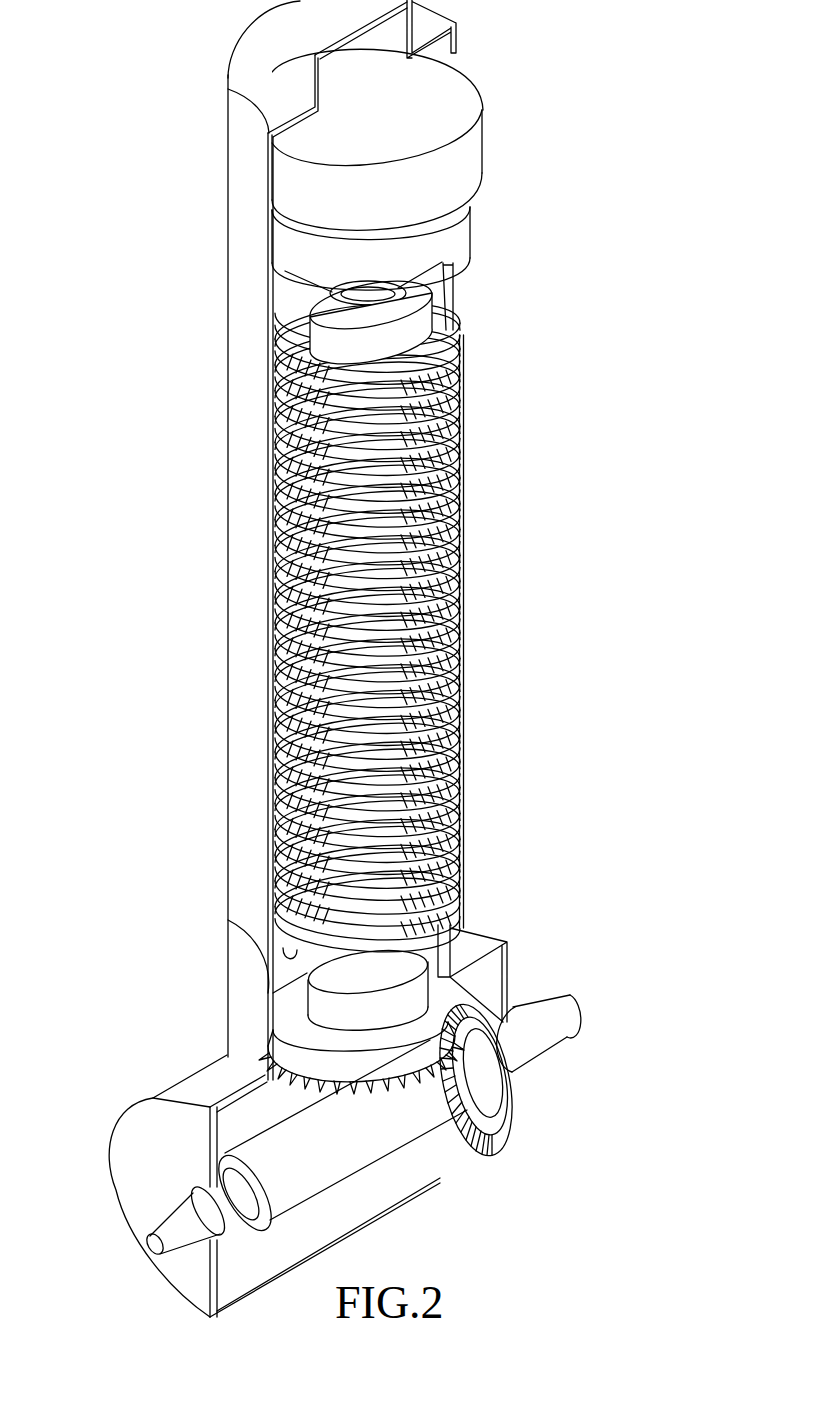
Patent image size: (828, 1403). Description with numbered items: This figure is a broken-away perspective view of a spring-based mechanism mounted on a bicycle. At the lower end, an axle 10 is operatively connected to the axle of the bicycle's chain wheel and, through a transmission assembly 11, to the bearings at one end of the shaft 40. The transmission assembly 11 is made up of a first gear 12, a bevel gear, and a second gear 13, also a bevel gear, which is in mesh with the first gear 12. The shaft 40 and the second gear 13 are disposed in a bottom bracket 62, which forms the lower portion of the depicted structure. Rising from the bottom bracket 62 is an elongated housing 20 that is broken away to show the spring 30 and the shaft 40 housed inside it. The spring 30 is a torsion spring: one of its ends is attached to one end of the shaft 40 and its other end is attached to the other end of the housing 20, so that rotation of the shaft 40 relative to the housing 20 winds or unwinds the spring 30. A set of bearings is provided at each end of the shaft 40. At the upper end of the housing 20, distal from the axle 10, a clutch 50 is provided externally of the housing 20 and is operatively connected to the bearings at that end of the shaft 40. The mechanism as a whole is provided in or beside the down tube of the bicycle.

The axle 10 is at (527, 1032).
The transmission assembly 11 is at (655, 1098).
The first gear 12 is at (497, 1148).
The second gear 13 is at (447, 1056).
The housing 20 is at (263, 592).
The spring 30 is at (452, 488).
The shaft 40 is at (452, 372).
The clutch 50 is at (490, 134).
The bottom bracket 62 is at (209, 1072).